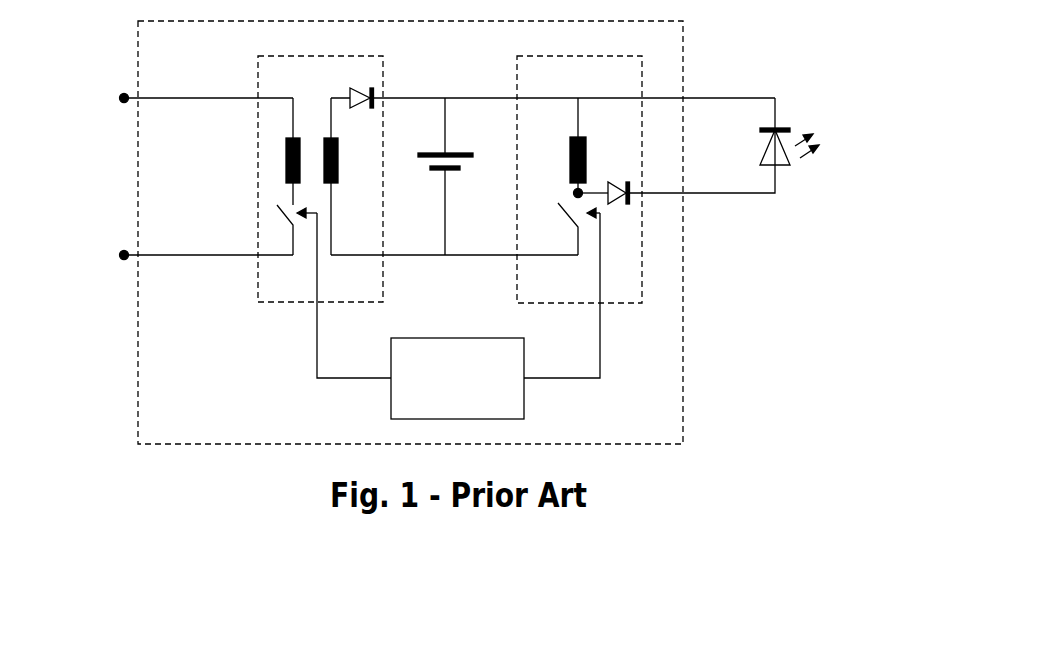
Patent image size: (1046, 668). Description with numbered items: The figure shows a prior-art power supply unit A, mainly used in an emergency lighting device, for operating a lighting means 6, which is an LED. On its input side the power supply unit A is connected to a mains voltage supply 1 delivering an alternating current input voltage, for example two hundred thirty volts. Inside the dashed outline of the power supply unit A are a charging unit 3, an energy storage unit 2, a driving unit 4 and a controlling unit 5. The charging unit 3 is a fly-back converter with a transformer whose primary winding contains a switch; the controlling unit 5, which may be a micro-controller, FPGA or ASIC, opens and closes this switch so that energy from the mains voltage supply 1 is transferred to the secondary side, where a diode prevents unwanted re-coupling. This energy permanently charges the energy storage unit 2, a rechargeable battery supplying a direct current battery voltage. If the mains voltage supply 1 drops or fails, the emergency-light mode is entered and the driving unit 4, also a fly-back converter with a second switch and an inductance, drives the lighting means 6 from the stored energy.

The mains voltage supply 1 is at (115, 165).
The energy storage unit 2 is at (443, 173).
The charging unit 3 is at (383, 56).
The driving unit 4 is at (515, 59).
The controlling unit 5 is at (524, 400).
The lighting means 6 is at (788, 127).
The power supply unit A is at (682, 383).